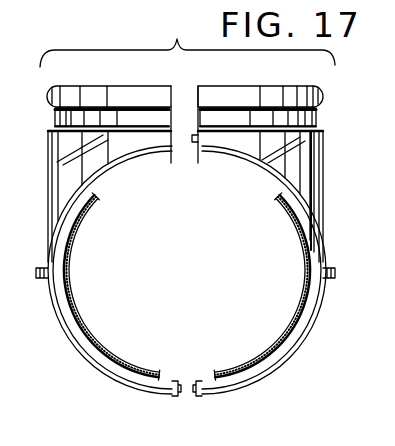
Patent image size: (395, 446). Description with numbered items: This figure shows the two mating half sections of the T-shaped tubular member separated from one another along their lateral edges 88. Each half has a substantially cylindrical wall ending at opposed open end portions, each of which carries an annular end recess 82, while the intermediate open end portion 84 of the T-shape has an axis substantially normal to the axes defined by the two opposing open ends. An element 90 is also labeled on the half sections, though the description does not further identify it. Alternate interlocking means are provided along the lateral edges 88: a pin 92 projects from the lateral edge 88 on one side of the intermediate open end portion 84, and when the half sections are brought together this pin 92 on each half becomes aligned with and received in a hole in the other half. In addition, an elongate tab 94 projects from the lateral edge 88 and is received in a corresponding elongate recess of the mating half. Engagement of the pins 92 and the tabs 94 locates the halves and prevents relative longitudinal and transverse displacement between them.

The annular end recess 82 is at (313, 111).
The intermediate open end portion 84 is at (42, 116).
The lateral edge 88 is at (198, 94).
The inner rail 90 is at (78, 306).
The pin 92 is at (192, 143).
The elongate tab 94 is at (191, 383).